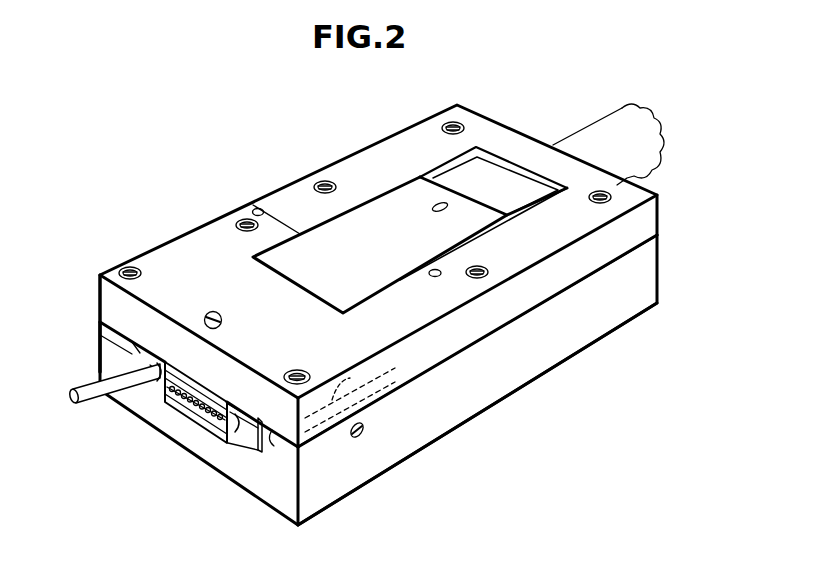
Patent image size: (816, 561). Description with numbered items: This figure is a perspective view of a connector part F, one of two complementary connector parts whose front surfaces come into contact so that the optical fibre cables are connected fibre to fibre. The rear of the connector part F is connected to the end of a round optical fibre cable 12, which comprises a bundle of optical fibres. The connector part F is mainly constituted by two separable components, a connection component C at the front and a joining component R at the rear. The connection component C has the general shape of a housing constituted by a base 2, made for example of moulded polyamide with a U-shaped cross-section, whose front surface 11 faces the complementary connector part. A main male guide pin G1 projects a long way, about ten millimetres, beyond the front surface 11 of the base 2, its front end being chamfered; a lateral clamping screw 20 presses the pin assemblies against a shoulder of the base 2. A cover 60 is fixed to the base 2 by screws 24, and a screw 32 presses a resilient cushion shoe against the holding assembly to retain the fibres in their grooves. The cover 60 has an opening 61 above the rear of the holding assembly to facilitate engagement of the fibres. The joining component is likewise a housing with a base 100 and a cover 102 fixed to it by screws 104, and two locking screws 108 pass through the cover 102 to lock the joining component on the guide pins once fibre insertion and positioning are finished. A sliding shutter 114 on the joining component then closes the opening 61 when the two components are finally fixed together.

The base 2 is at (318, 462).
The front surface 11 is at (270, 465).
The optical fibre cable 12 is at (604, 128).
The lateral clamping screw 20 is at (365, 438).
The screws 24 is at (130, 268).
The screw 32 is at (211, 312).
The cover 60 is at (383, 372).
The opening 61 is at (302, 287).
The base 100 is at (553, 332).
The cover 102 is at (585, 253).
The screws 104 is at (456, 124).
The locking screws 108 is at (258, 208).
The sliding shutter 114 is at (407, 202).
The connection component C is at (100, 302).
The connector part F is at (484, 425).
The main male guide pin G1 is at (90, 394).
The cover region R is at (323, 160).